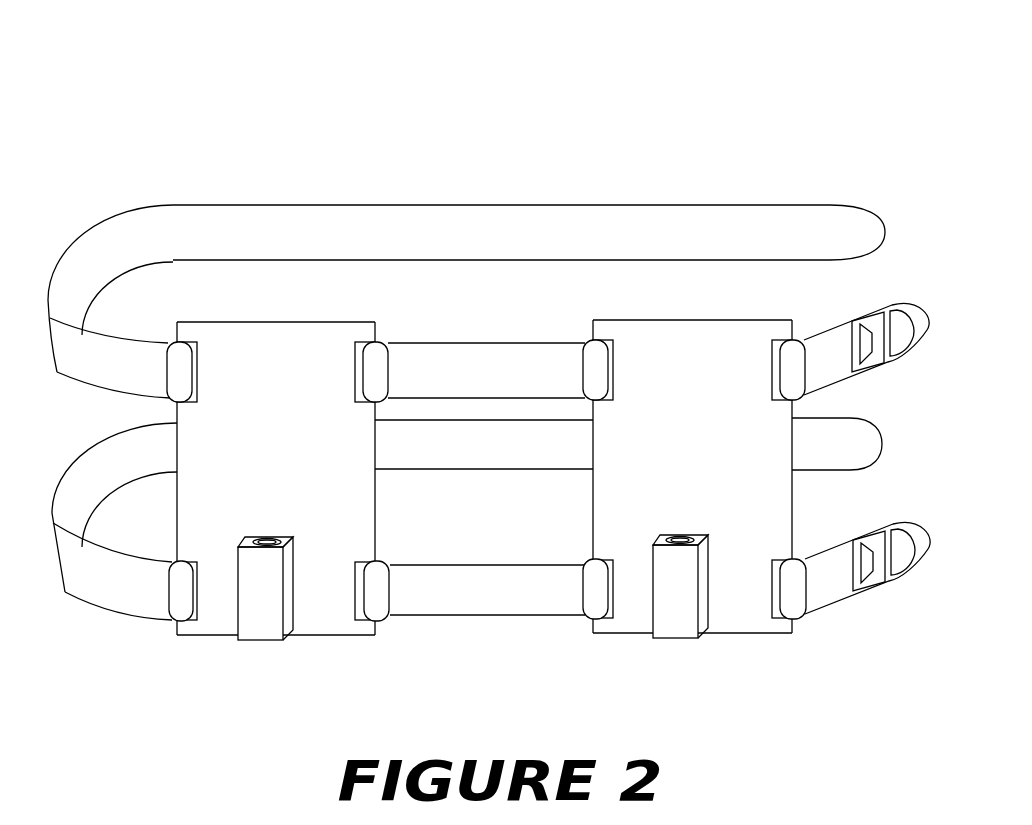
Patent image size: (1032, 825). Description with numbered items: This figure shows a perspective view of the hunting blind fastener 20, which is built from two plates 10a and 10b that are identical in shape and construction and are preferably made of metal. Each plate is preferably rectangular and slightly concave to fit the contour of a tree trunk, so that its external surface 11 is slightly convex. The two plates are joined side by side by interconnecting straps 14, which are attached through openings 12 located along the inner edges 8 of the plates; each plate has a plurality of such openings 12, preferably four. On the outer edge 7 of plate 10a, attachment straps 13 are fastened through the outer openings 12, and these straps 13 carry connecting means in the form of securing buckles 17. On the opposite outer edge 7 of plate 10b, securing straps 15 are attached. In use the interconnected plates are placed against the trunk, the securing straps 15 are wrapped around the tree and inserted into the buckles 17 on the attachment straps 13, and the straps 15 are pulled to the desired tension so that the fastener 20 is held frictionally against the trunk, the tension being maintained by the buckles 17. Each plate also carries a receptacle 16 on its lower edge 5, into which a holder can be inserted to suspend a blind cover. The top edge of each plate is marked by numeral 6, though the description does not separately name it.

The hunting blind fastener 20 is at (526, 104).
The plate 10a is at (732, 697).
The plate 10b is at (220, 698).
The external surface 11 is at (482, 486).
The lower edge 5 is at (332, 637).
The top edge of cuff body 6 is at (274, 322).
The outer edge 7 is at (177, 513).
The inner edge 8 is at (375, 500).
The openings 12 is at (185, 362).
The attachment straps 13 is at (813, 366).
The interconnecting straps 14 is at (468, 383).
The securing straps 15 is at (471, 245).
The receptacle 16 is at (267, 540).
The securing buckles 17 is at (888, 363).